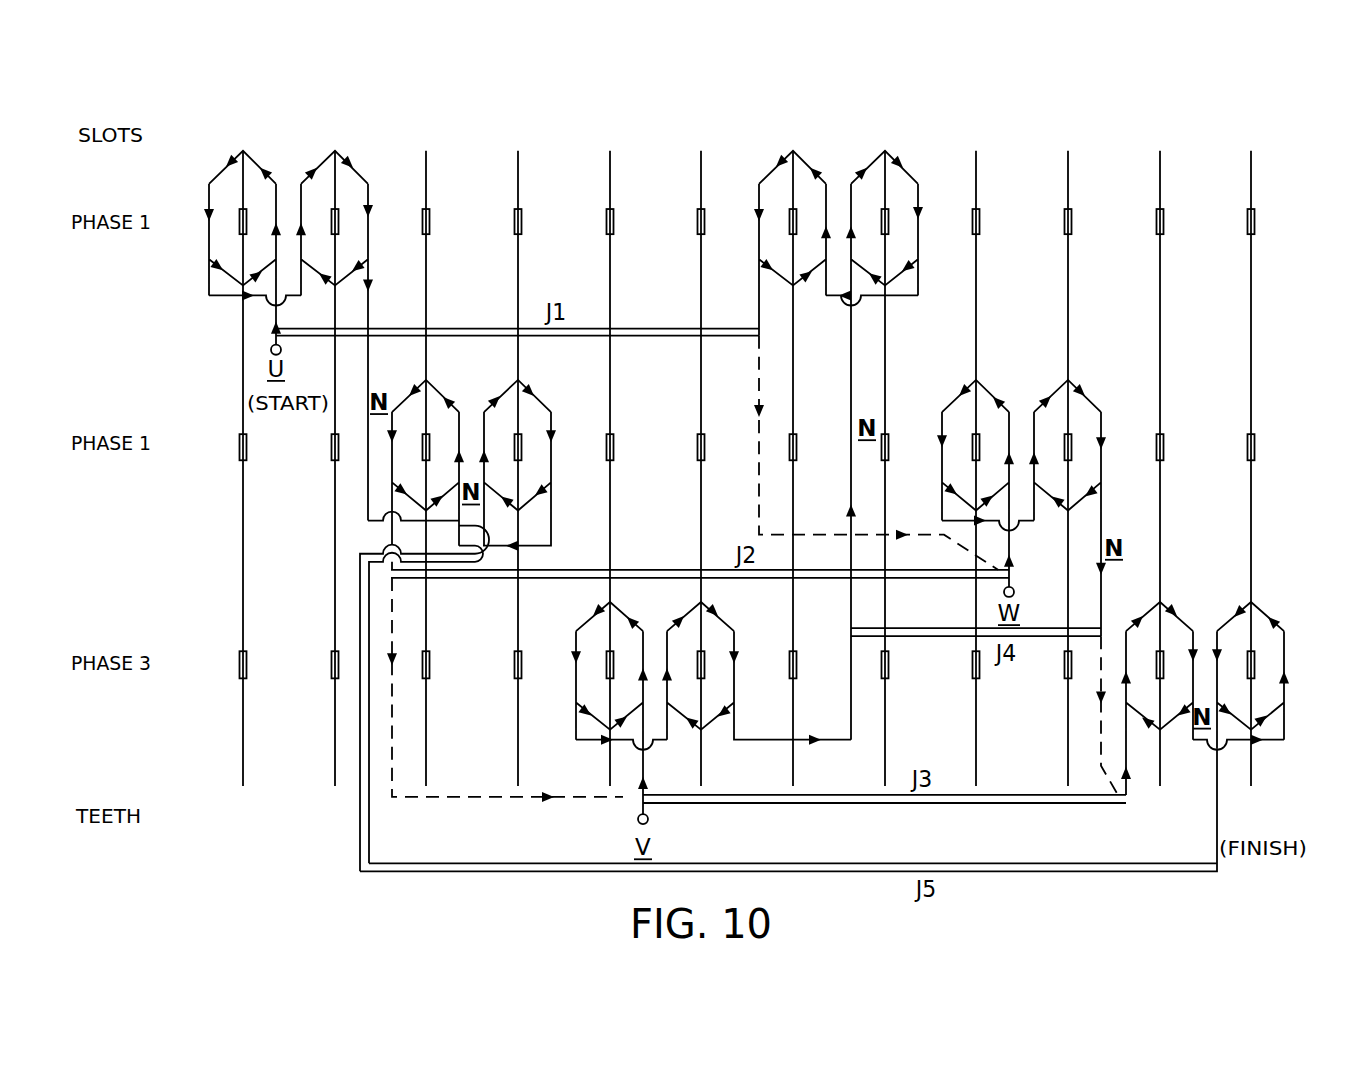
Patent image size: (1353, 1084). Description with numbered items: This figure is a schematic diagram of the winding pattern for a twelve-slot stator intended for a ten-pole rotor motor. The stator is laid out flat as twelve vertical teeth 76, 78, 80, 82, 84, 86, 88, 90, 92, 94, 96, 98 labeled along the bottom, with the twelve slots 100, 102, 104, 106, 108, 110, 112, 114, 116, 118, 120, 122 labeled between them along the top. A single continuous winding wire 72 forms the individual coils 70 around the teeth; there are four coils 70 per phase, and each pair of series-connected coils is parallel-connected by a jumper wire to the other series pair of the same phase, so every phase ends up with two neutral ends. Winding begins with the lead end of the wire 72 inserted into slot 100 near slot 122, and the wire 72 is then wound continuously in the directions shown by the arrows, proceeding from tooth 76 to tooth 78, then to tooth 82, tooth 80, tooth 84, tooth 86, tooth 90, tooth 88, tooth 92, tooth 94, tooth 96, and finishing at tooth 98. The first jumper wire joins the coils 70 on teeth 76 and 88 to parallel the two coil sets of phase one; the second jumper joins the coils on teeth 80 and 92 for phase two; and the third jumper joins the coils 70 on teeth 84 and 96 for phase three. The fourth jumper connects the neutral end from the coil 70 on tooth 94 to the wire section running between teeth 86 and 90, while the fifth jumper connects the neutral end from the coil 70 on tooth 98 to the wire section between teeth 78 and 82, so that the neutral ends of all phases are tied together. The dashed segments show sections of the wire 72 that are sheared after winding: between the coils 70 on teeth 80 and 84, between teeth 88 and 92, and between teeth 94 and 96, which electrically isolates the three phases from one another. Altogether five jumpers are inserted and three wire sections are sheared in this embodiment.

The coil 70 is at (276, 182).
The winding wire 72 is at (276, 308).
The tooth 76 is at (243, 490).
The tooth 78 is at (335, 490).
The tooth 80 is at (426, 490).
The tooth 82 is at (518, 490).
The tooth 84 is at (610, 490).
The tooth 86 is at (701, 490).
The tooth 88 is at (793, 490).
The tooth 90 is at (885, 490).
The tooth 92 is at (976, 490).
The tooth 94 is at (1068, 490).
The tooth 96 is at (1160, 490).
The tooth 98 is at (1251, 490).
The slot 100 is at (289, 134).
The slot 102 is at (381, 134).
The slot 104 is at (473, 134).
The slot 106 is at (564, 134).
The slot 108 is at (656, 134).
The slot 110 is at (747, 134).
The slot 112 is at (839, 134).
The slot 114 is at (931, 134).
The slot 116 is at (1023, 134).
The slot 118 is at (1114, 134).
The slot 120 is at (1206, 134).
The slot 122 is at (747, 134).